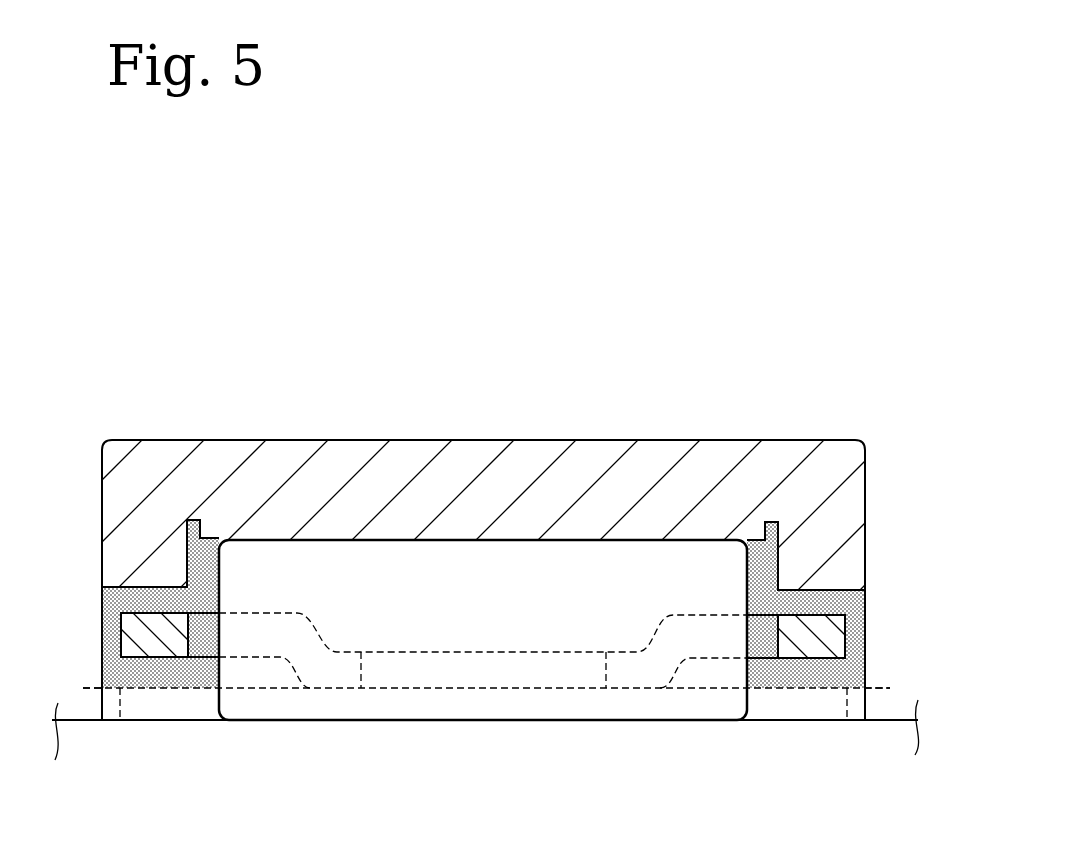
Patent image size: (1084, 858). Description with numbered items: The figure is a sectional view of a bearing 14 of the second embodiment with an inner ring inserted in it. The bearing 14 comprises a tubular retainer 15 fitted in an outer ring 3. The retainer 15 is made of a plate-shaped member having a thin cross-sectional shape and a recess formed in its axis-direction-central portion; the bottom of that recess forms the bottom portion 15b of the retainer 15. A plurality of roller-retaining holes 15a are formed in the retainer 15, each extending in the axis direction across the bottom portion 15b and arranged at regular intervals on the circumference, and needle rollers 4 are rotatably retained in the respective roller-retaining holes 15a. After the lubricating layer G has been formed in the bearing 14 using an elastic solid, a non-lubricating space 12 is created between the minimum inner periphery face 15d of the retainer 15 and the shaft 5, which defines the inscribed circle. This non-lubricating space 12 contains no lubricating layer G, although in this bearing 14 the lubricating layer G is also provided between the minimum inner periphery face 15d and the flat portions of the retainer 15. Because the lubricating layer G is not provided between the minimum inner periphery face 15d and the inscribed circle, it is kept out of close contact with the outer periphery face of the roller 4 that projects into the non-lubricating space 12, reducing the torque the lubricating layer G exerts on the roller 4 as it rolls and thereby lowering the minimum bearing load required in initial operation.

The outer ring 3 is at (290, 448).
The needle roller 4 is at (455, 577).
The shaft 5 is at (68, 730).
The non-lubricating space 12 is at (177, 703).
The bearing 14 is at (836, 421).
The retainer 15 is at (845, 627).
The roller-retaining hole 15a is at (775, 634).
The bottom portion 15b is at (620, 683).
The minimum inner periphery face 15d is at (84, 686).
The lubricating layer G is at (755, 547).